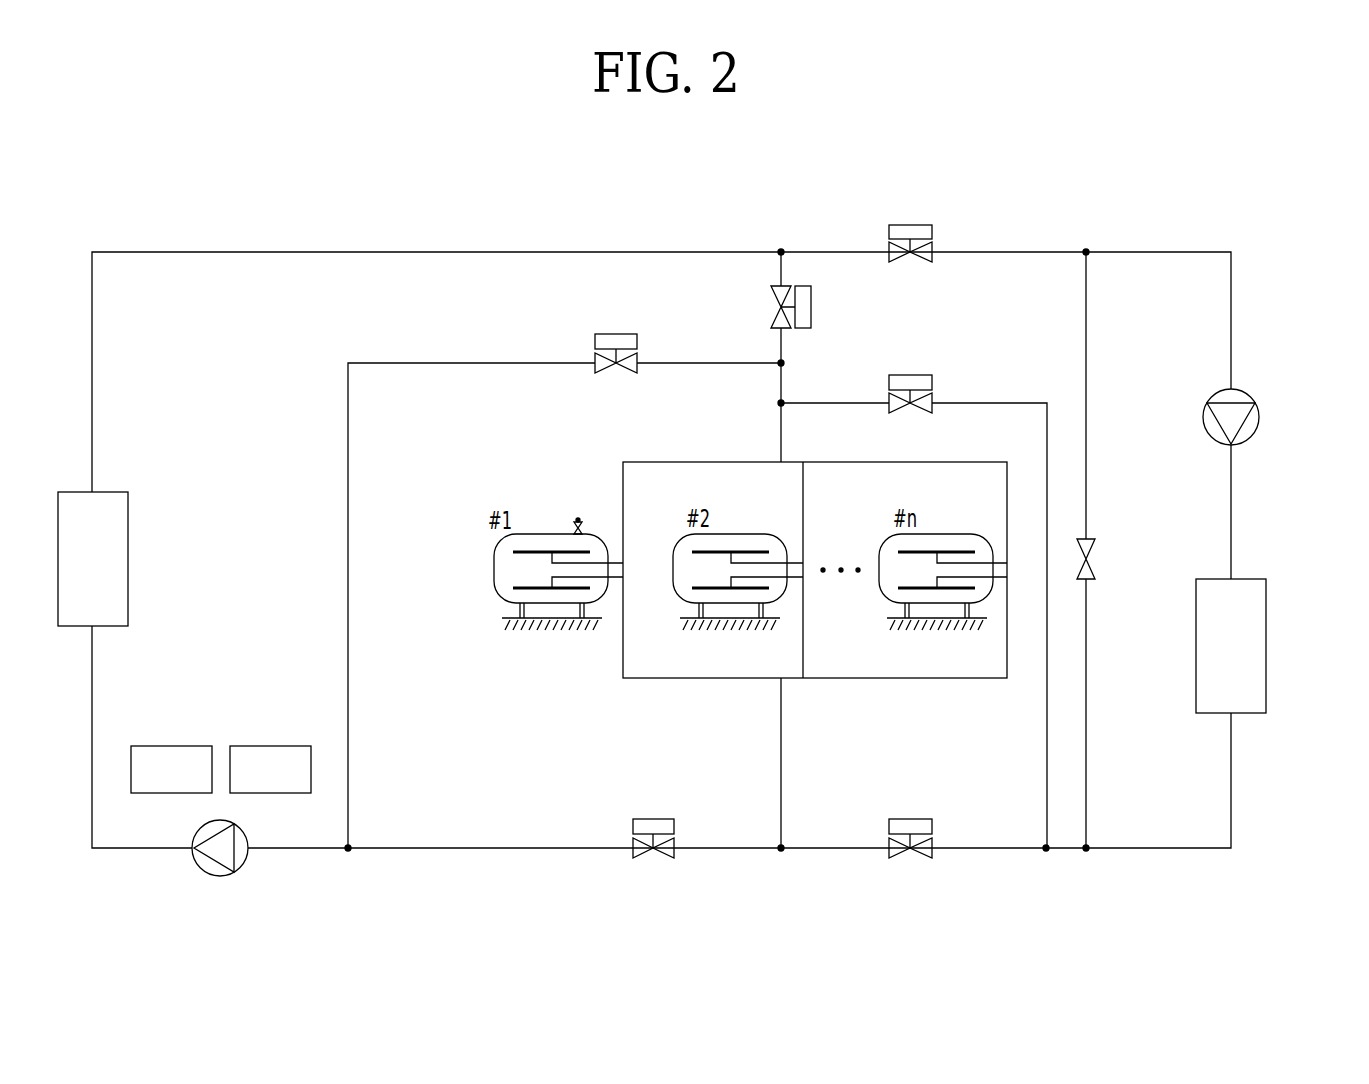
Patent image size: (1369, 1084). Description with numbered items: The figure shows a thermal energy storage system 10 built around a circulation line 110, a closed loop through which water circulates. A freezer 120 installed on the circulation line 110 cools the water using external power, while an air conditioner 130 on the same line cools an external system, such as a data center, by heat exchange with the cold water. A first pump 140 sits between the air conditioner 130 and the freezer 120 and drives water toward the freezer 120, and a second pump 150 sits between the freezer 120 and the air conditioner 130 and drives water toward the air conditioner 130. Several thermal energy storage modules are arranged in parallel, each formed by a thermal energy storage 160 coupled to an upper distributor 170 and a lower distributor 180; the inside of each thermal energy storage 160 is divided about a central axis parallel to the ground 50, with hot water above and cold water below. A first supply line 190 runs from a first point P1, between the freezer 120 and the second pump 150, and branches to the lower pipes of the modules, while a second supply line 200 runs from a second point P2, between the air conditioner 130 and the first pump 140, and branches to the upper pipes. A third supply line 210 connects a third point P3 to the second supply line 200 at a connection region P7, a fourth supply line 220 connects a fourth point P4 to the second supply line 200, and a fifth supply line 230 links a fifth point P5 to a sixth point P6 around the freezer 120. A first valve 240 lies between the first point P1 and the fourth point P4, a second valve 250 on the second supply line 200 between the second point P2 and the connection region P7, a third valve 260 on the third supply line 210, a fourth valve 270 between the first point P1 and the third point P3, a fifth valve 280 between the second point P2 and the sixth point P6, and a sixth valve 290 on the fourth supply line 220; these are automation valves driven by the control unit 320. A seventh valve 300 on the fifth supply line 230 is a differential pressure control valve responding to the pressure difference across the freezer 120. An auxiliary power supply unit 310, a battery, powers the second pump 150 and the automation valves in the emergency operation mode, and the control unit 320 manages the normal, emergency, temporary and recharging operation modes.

The thermal energy storage system 10 is at (1266, 174).
The ground 50 is at (500, 618).
The circulation line 110 is at (281, 252).
The freezer 120 is at (1231, 646).
The air conditioner 130 is at (93, 559).
The first pump 140 is at (1259, 417).
The second pump 150 is at (222, 876).
The thermal energy storage 160 is at (578, 520).
The upper distributor 170 is at (535, 552).
The lower distributor 180 is at (532, 584).
The first supply line 190 is at (781, 749).
The second supply line 200 is at (781, 434).
The third supply line 210 is at (349, 440).
The fourth supply line 220 is at (1047, 746).
The fifth supply line 230 is at (1086, 491).
The first valve 240 is at (913, 858).
The second valve 250 is at (811, 306).
The third valve 260 is at (616, 334).
The fourth valve 270 is at (656, 858).
The fifth valve 280 is at (912, 225).
The sixth valve 290 is at (912, 375).
The seventh valve 300 is at (1094, 559).
The auxiliary power supply unit 310 is at (171, 769).
The control unit 320 is at (270, 769).
The first point P1 is at (781, 852).
The second point P2 is at (781, 250).
The third point P3 is at (348, 852).
The fourth point P4 is at (1046, 852).
The fifth point P5 is at (1086, 852).
The sixth point P6 is at (1086, 250).
The connection region P7 is at (784, 363).